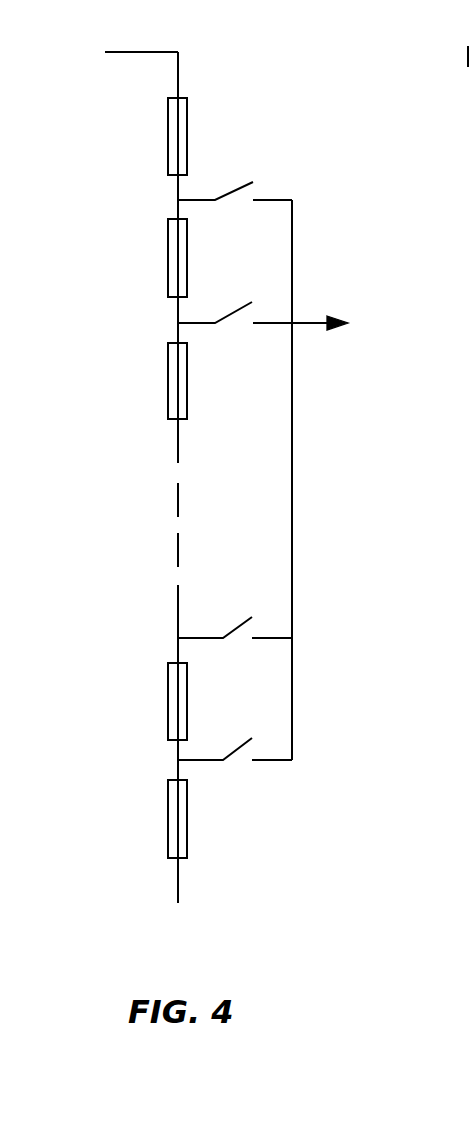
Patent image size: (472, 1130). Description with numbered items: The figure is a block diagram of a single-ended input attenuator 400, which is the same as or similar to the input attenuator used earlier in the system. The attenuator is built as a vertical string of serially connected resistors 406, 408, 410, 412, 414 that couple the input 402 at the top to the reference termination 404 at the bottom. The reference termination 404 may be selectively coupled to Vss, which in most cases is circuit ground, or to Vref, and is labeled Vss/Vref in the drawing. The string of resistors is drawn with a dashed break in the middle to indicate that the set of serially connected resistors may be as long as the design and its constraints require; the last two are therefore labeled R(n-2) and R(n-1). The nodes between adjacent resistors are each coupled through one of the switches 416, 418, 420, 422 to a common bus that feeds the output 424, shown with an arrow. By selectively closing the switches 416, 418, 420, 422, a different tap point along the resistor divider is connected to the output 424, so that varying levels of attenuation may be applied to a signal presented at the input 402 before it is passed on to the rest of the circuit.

The input attenuator 400 is at (337, 88).
The input 402 is at (130, 48).
The reference termination 404 is at (178, 875).
The resistor 406 is at (168, 123).
The resistor 408 is at (168, 252).
The resistor 410 is at (168, 373).
The resistor 412 is at (168, 680).
The resistor 414 is at (168, 797).
The switch 416 is at (220, 199).
The switch 418 is at (217, 313).
The switch 420 is at (220, 633).
The switch 422 is at (225, 755).
The output 424 is at (420, 343).